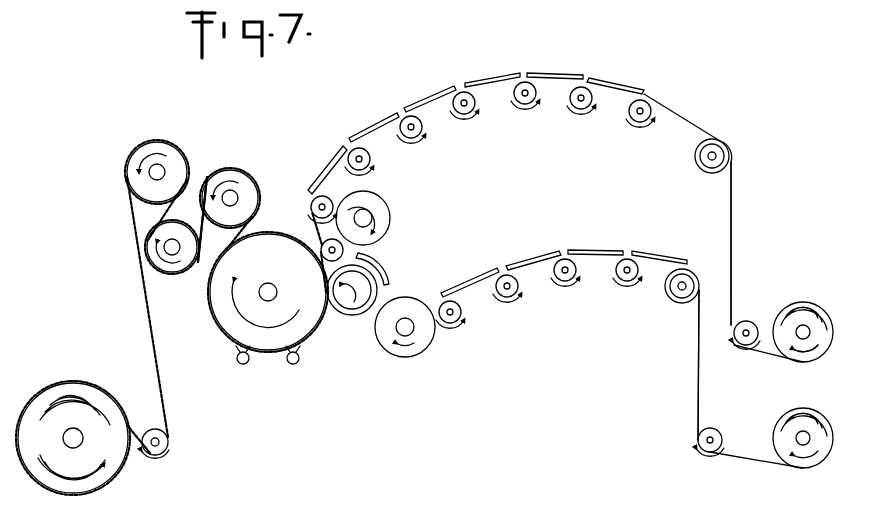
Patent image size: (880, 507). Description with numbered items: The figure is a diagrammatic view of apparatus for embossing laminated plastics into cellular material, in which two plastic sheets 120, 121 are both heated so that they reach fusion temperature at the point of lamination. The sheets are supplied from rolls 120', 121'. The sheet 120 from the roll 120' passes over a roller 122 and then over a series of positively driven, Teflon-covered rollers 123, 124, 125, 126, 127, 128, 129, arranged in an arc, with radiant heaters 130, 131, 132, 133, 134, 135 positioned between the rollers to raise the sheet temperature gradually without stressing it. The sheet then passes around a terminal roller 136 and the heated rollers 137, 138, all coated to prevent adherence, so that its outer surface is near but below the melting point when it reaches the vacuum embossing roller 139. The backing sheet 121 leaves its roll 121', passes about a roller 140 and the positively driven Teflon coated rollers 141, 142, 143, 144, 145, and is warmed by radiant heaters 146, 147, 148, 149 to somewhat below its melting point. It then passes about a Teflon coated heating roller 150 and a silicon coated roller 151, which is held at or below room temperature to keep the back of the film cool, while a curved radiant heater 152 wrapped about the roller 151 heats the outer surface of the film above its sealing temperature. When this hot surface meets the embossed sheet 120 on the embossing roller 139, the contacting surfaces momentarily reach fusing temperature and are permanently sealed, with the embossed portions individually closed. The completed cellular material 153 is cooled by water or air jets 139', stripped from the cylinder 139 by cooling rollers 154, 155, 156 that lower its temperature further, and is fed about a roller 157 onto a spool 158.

The plastic sheet 120 is at (759, 243).
The roll 120' is at (806, 313).
The backing plastic sheet 121 is at (726, 365).
The roll of the film 121' is at (805, 424).
The roller 122 is at (749, 321).
The roller 123 is at (701, 169).
The roller 124 is at (639, 125).
The roller 125 is at (580, 111).
The roller 126 is at (523, 107).
The roller 127 is at (464, 116).
The roller 128 is at (412, 139).
The roller 129 is at (374, 163).
The radiant heater 130 is at (618, 84).
The radiant heater 131 is at (554, 73).
The radiant heater 132 is at (491, 80).
The radiant heater 133 is at (426, 99).
The radiant heater 134 is at (371, 123).
The radiant heater 135 is at (338, 162).
The terminal roller 136 is at (313, 209).
The roller 137 is at (389, 232).
The roller 138 is at (332, 258).
The vacuum embossing roller 139 is at (268, 292).
The water or air jets 139' is at (256, 374).
The roller 140 is at (717, 431).
The Teflon coated roller 141 is at (679, 304).
The Teflon coated roller 142 is at (623, 283).
The Teflon coated roller 143 is at (563, 283).
The Teflon coated roller 144 is at (506, 299).
The Teflon coated roller 145 is at (451, 326).
The radiant heater 146 is at (665, 256).
The radiant heater 147 is at (600, 250).
The radiant heater 148 is at (528, 262).
The radiant heater 149 is at (470, 282).
The Teflon coated heating roller 150 is at (414, 303).
The silicon coated roller 151 is at (346, 316).
The radiant heater 152 is at (385, 272).
The completed cellular material 153 is at (236, 168).
The cooling roller 154 is at (253, 192).
The cooling roller 155 is at (183, 268).
The cooling roller 156 is at (164, 142).
The roller 157 is at (152, 429).
The spool 158 is at (68, 390).